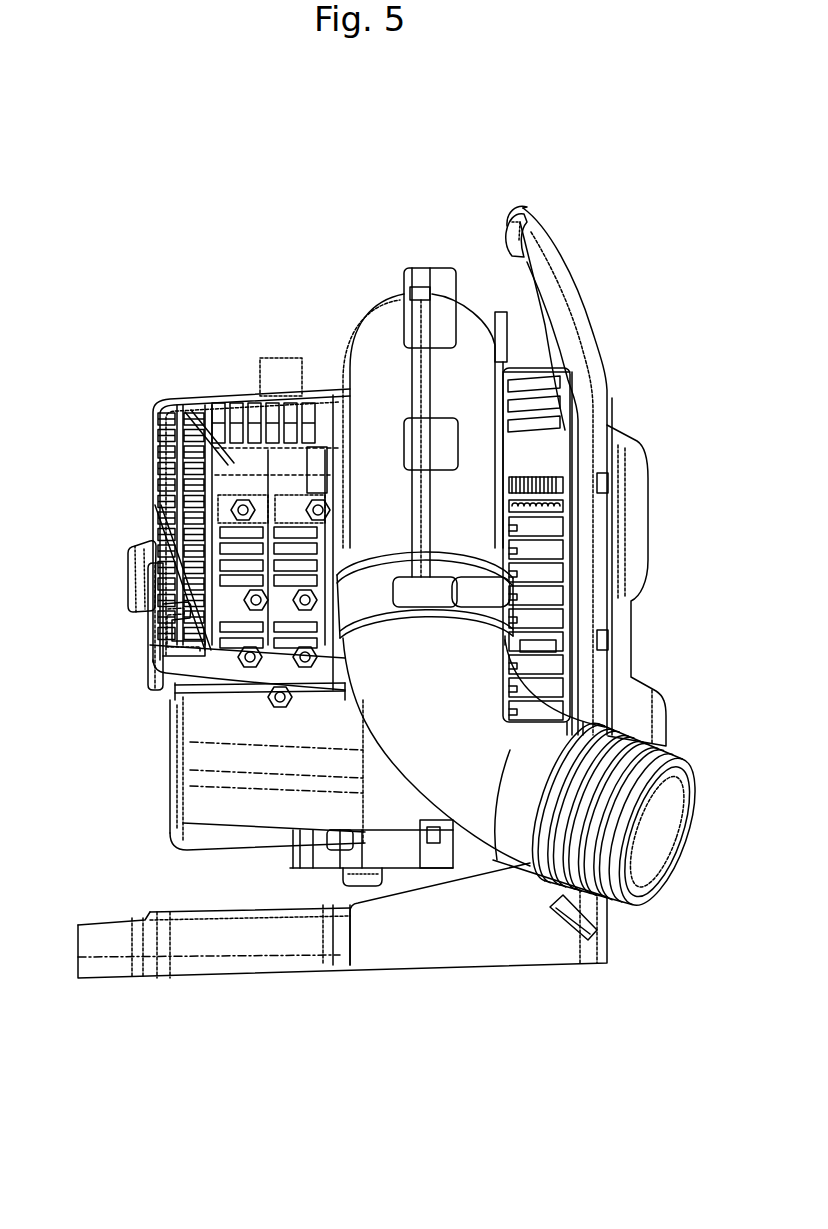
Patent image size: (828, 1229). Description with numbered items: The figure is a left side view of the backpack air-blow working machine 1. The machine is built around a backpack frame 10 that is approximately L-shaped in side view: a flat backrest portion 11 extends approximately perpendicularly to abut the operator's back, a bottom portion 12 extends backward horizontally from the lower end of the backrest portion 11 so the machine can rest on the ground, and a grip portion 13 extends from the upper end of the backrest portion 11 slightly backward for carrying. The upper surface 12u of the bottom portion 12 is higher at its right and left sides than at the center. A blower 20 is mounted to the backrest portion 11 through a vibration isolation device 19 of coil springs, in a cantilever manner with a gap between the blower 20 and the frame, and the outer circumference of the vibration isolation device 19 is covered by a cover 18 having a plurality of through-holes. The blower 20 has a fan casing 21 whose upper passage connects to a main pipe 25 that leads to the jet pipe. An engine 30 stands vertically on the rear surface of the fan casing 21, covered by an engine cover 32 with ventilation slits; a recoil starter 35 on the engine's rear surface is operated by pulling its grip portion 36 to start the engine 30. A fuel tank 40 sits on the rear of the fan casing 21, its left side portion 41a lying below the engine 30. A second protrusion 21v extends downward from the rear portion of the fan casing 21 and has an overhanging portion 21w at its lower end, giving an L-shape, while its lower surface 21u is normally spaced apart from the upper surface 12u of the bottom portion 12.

The backpack air-blow working machine 1 is at (630, 188).
The backpack frame 10 is at (585, 283).
The backrest portion 11 is at (607, 403).
The grip portion 13 is at (523, 208).
The cover 18 is at (537, 366).
The vibration isolation device 19 is at (540, 478).
The blower 20 is at (391, 272).
The fan casing 21 is at (370, 313).
The lower surface of the protrusion 21u is at (355, 873).
The second protrusion 21v is at (390, 851).
The overhanging portion 21w is at (347, 863).
The main pipe 25 is at (512, 850).
The engine 30 is at (230, 383).
The engine cover 32 is at (150, 397).
The recoil starter 35 is at (140, 645).
The grip portion 36 is at (130, 563).
The fuel tank 40 is at (160, 790).
The left side portion 41a is at (160, 810).
The bottom portion 12 is at (183, 980).
The upper surface of the bottom portion 12u is at (210, 913).